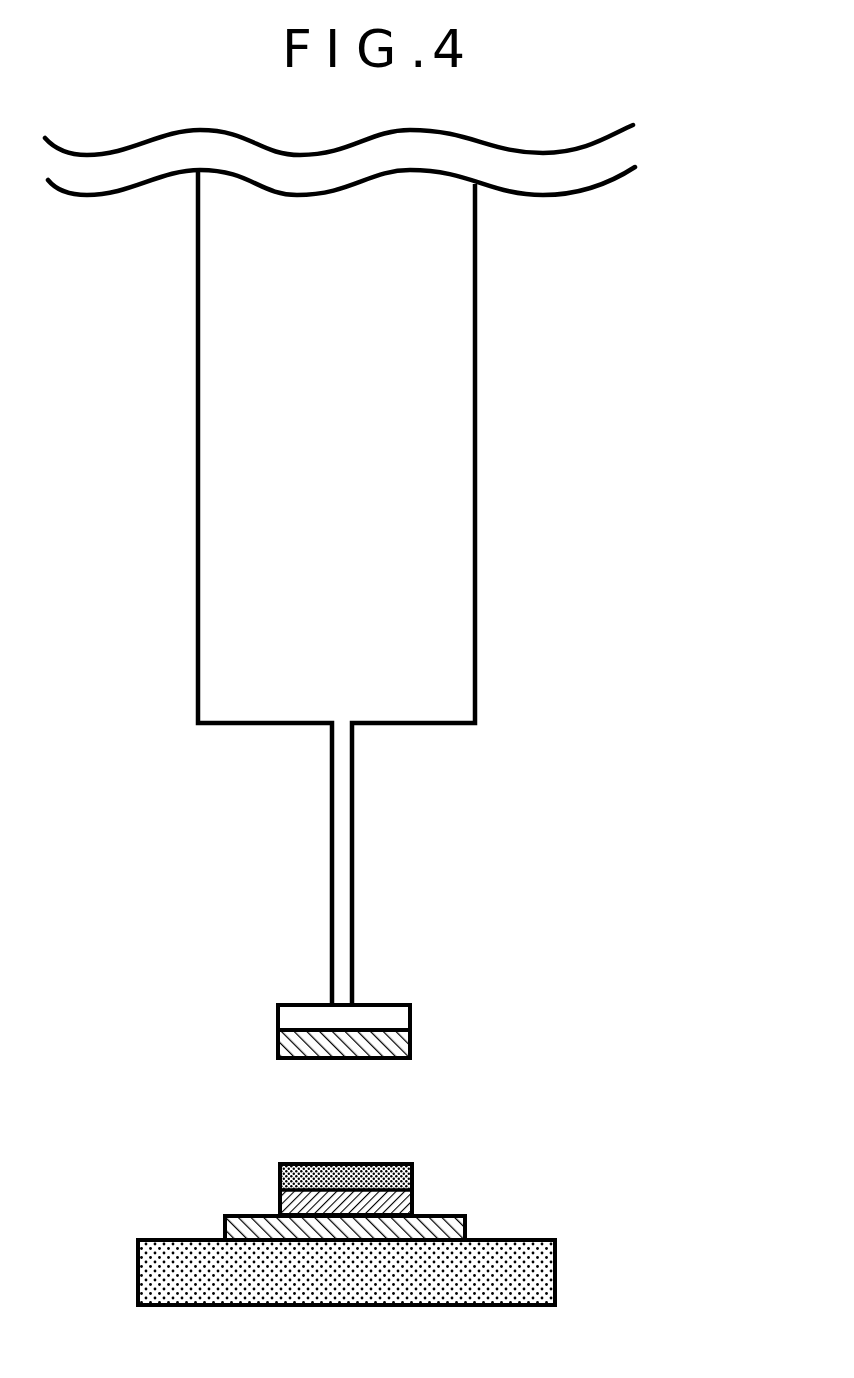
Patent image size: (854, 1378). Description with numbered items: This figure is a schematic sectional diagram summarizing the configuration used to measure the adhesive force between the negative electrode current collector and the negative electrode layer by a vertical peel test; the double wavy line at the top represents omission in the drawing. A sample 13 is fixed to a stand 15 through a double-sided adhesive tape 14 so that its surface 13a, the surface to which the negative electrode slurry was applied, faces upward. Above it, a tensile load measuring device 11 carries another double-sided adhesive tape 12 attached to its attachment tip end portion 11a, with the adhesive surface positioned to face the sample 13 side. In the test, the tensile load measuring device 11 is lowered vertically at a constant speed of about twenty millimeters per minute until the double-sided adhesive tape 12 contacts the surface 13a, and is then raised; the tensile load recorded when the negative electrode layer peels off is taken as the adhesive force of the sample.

The tensile load measuring device 11 is at (427, 641).
The attachment tip end portion 11a is at (397, 1015).
The double-sided adhesive tape 12 is at (410, 1037).
The sample 13 is at (280, 1163).
The surface 13a is at (405, 1177).
The double-sided adhesive tape 14 is at (458, 1230).
The stand 15 is at (525, 1275).